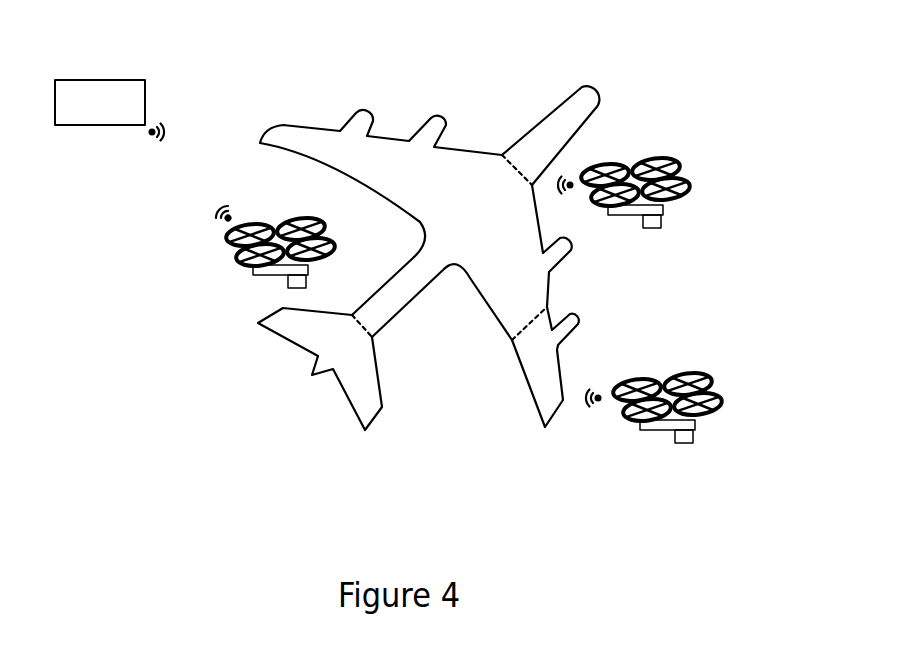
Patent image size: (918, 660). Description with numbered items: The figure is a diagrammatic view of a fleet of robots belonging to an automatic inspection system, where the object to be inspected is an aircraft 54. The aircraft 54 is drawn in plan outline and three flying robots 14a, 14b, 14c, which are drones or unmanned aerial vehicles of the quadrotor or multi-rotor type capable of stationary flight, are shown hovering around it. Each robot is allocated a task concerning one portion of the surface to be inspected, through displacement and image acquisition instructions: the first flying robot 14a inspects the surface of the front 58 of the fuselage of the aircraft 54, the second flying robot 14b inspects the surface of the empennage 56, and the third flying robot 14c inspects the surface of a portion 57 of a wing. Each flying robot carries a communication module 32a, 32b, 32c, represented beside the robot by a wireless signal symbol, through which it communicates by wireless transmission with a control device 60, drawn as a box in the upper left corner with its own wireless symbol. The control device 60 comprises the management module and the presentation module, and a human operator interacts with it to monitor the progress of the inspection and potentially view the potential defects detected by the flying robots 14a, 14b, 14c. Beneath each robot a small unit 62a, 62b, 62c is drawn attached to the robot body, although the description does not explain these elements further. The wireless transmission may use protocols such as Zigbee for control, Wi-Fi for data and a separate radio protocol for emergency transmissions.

The first flying robot 14a is at (661, 213).
The second flying robot 14b is at (240, 275).
The third flying robot 14c is at (692, 428).
The communication module 32a is at (568, 175).
The communication module 32b is at (217, 207).
The communication module 32c is at (591, 389).
The aircraft 54 is at (472, 150).
The empennage 56 is at (347, 397).
The portion of a wing 57 is at (537, 393).
The front of the fuselage 58 is at (530, 122).
The control device 60 is at (128, 80).
The sensor unit 62a is at (663, 223).
The sensor unit 62b is at (287, 282).
The sensor unit 62c is at (683, 443).